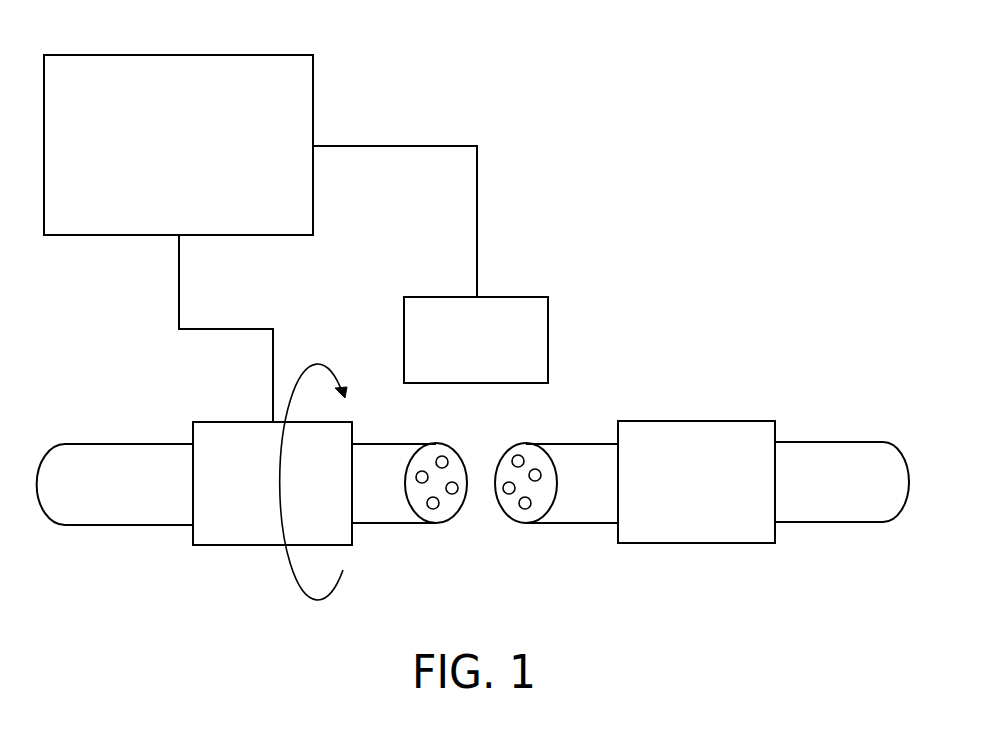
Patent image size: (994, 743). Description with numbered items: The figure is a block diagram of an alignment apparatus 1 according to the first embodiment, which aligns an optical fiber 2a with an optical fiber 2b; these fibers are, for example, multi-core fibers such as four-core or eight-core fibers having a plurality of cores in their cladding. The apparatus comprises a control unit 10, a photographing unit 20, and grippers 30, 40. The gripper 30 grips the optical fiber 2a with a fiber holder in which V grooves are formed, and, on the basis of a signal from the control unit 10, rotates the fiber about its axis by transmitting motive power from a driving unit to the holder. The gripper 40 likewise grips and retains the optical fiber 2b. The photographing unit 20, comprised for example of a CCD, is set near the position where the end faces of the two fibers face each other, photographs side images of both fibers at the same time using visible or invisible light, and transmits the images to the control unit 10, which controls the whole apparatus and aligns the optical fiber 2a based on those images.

The alignment apparatus 1 is at (511, 88).
The control unit 10 is at (313, 70).
The photographing unit 20 is at (548, 339).
The gripper 30 is at (208, 420).
The gripper 40 is at (758, 419).
The optical fiber 2a is at (73, 442).
The optical fiber 2b is at (866, 440).